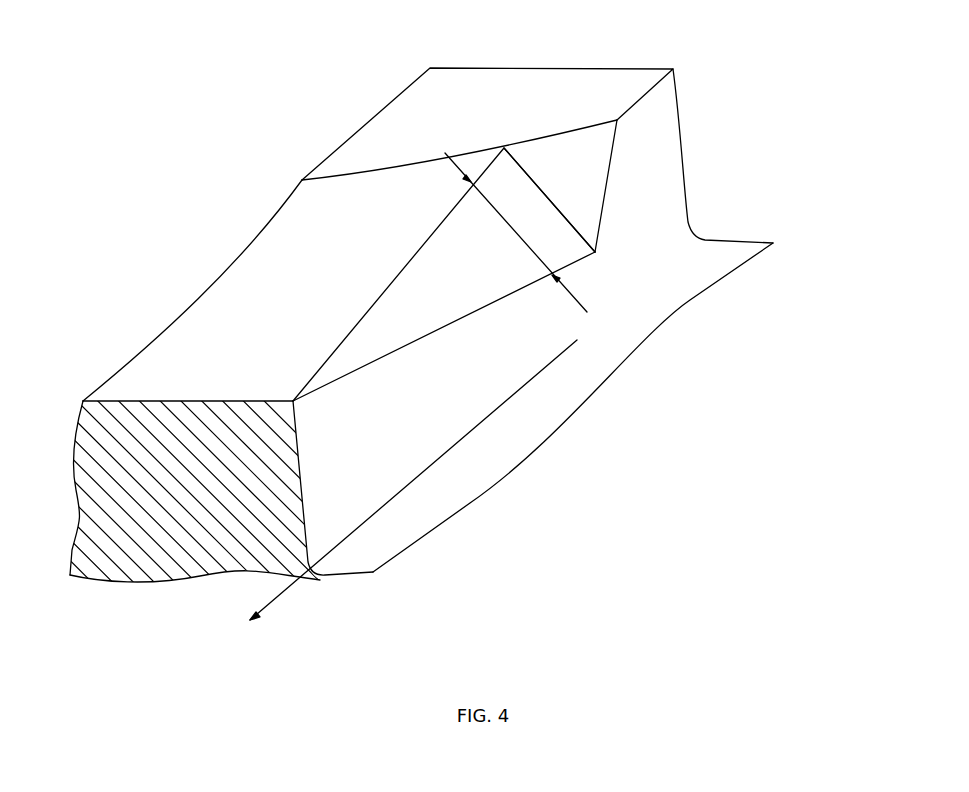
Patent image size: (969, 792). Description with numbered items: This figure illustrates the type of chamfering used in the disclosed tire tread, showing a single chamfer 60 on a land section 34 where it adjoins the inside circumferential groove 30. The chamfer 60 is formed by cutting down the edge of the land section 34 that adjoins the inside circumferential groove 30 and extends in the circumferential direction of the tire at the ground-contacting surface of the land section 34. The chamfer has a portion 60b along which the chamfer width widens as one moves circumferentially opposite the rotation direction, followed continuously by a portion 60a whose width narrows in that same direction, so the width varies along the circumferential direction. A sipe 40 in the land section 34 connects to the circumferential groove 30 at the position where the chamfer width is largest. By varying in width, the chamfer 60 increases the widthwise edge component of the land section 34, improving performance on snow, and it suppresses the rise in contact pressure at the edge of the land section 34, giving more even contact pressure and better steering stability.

The inside circumferential groove 30 is at (361, 552).
The land section 34 is at (472, 104).
The sipe 40 is at (337, 170).
The chamfer 60 is at (513, 190).
The portion 60a is at (485, 273).
The portion 60b is at (590, 188).